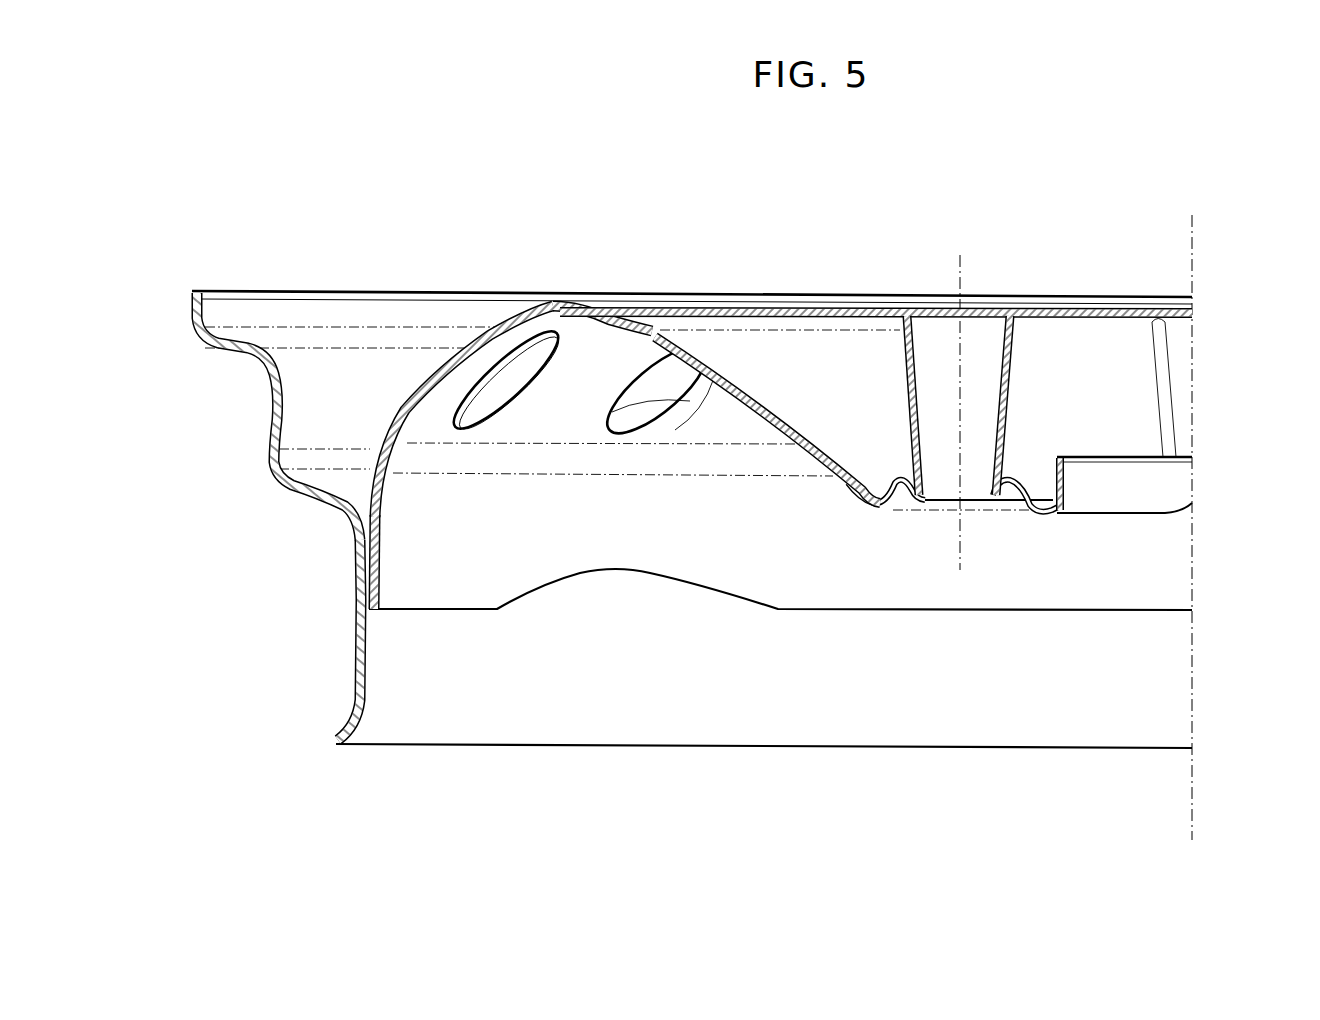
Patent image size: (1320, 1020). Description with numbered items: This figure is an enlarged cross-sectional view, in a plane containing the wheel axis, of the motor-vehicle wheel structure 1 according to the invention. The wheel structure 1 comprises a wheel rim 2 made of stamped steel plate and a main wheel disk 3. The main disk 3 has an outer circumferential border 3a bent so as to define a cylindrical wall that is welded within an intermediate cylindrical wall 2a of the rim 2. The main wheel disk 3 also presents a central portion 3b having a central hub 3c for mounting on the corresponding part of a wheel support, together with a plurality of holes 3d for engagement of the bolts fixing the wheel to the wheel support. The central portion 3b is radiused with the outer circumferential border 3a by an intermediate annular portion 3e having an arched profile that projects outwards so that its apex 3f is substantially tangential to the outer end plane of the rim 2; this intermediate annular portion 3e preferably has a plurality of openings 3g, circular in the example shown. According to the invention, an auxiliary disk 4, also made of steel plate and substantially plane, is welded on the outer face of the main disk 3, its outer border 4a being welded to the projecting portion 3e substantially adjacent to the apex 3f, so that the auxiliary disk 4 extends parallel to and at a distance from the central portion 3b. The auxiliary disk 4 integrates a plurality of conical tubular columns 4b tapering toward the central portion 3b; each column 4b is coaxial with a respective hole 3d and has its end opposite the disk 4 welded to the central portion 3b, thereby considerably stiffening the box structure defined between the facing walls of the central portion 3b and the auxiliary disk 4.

The motor-vehicle wheel structure 1 is at (262, 210).
The wheel rim 2 is at (262, 378).
The intermediate cylindrical wall 2a is at (343, 531).
The main wheel disk 3 is at (810, 441).
The outer circumferential border 3a is at (382, 553).
The central portion 3b is at (1140, 518).
The central hub 3c is at (1062, 480).
The holes 3d is at (937, 490).
The intermediate annular portion 3e is at (408, 398).
The apex 3f is at (540, 305).
The openings 3g is at (620, 412).
The auxiliary disk 4 is at (876, 349).
The outer border 4a is at (613, 313).
The tubular columns 4b is at (935, 376).